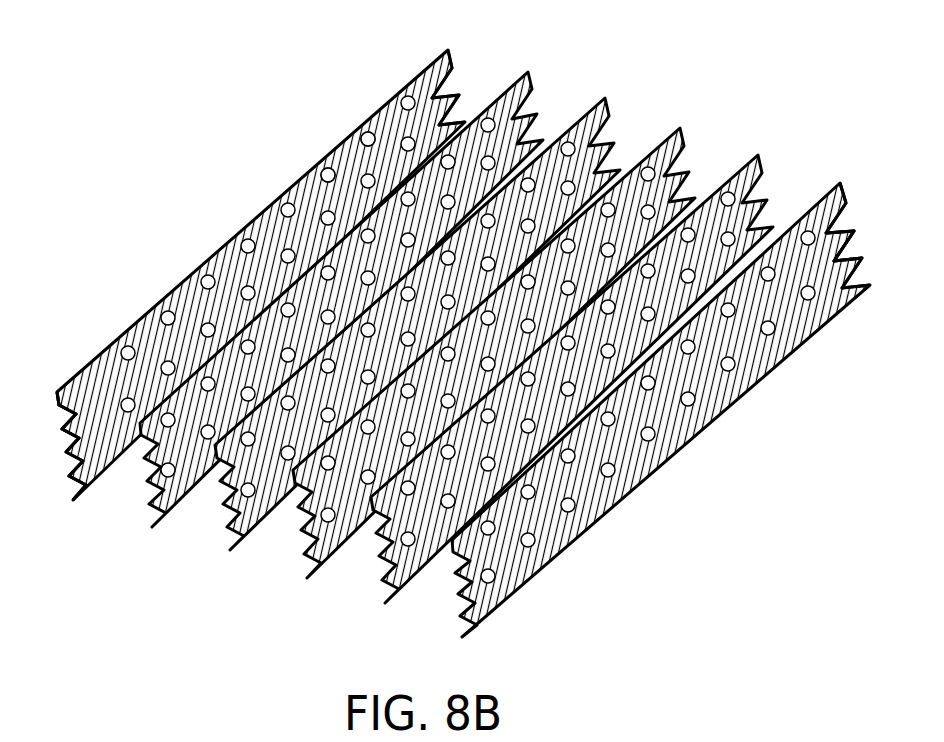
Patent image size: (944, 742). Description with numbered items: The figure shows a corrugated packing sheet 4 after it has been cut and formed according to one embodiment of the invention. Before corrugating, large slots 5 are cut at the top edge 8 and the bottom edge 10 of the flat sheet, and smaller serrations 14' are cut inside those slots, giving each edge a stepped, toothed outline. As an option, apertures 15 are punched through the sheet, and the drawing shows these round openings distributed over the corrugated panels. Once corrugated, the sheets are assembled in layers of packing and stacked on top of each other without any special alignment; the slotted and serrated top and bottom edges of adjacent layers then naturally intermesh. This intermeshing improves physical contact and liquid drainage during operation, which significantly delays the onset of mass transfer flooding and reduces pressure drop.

The packing sheet 4 is at (256, 217).
The top edge 8 is at (438, 50).
The bottom edge 10 is at (59, 392).
The large slots 5 is at (57, 426).
The smaller serrations 14' is at (479, 418).
The apertures 15 is at (346, 160).